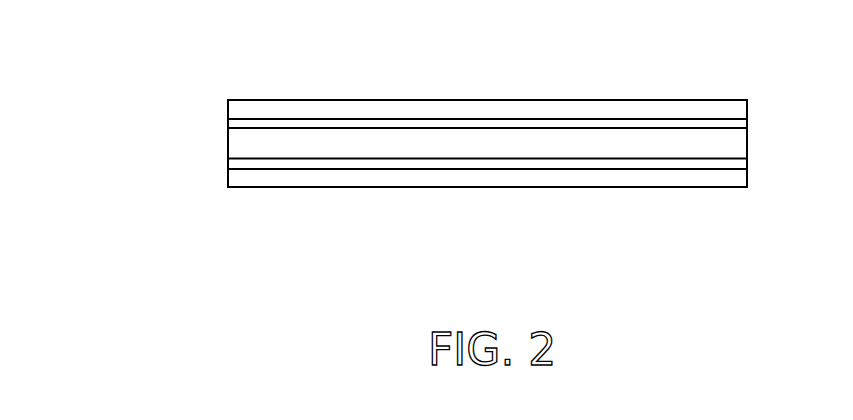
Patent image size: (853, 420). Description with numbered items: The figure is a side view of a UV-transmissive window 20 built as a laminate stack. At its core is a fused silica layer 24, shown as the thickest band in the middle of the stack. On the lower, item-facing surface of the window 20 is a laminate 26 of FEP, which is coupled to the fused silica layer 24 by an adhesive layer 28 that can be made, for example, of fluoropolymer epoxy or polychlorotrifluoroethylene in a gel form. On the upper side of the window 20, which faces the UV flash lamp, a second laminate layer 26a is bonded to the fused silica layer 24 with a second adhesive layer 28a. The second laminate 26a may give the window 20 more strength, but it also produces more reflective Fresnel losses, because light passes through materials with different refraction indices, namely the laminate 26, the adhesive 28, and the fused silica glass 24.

The window 20 is at (121, 161).
The fused silica layer 24 is at (747, 135).
The laminate 26 is at (732, 187).
The adhesive layer 28 is at (747, 164).
The second laminate layer 26a is at (228, 100).
The second adhesive layer 28a is at (228, 122).